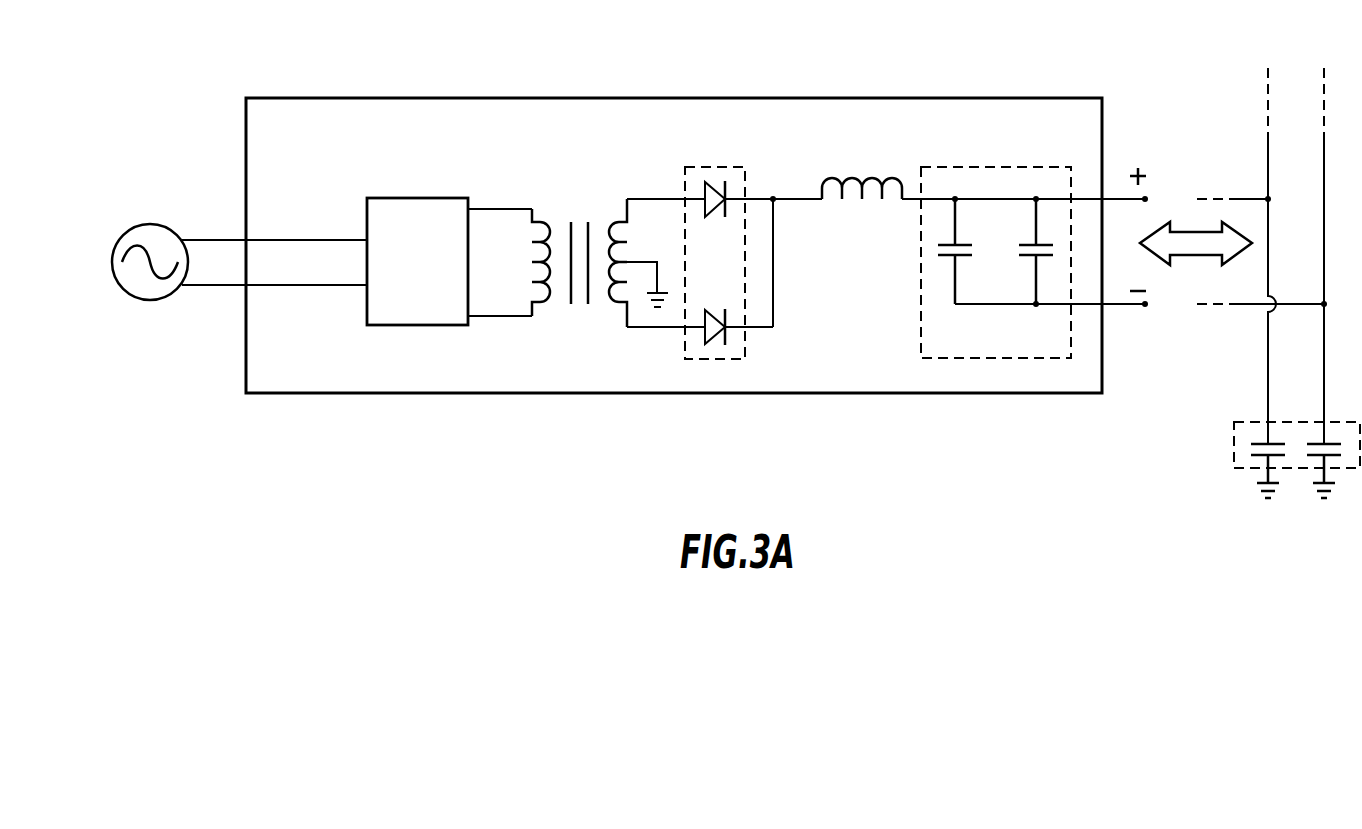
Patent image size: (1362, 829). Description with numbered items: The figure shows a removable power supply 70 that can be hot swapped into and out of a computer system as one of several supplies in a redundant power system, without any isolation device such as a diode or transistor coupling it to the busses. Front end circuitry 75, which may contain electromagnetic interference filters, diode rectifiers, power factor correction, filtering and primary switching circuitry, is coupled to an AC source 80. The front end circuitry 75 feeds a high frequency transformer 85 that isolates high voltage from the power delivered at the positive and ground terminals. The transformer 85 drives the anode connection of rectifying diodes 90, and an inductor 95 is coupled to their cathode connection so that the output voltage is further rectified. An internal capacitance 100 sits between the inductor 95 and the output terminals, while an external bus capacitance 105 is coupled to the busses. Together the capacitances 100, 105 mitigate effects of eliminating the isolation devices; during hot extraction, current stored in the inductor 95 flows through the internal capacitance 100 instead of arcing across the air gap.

The power supply 70 is at (225, 96).
The front end circuitry 75 is at (391, 198).
The AC source 80 is at (113, 282).
The high frequency transformer 85 is at (573, 205).
The rectifying diodes 90 is at (698, 167).
The inductor 95 is at (870, 178).
The internal capacitance 100 is at (997, 167).
The external bus capacitance 105 is at (1240, 422).